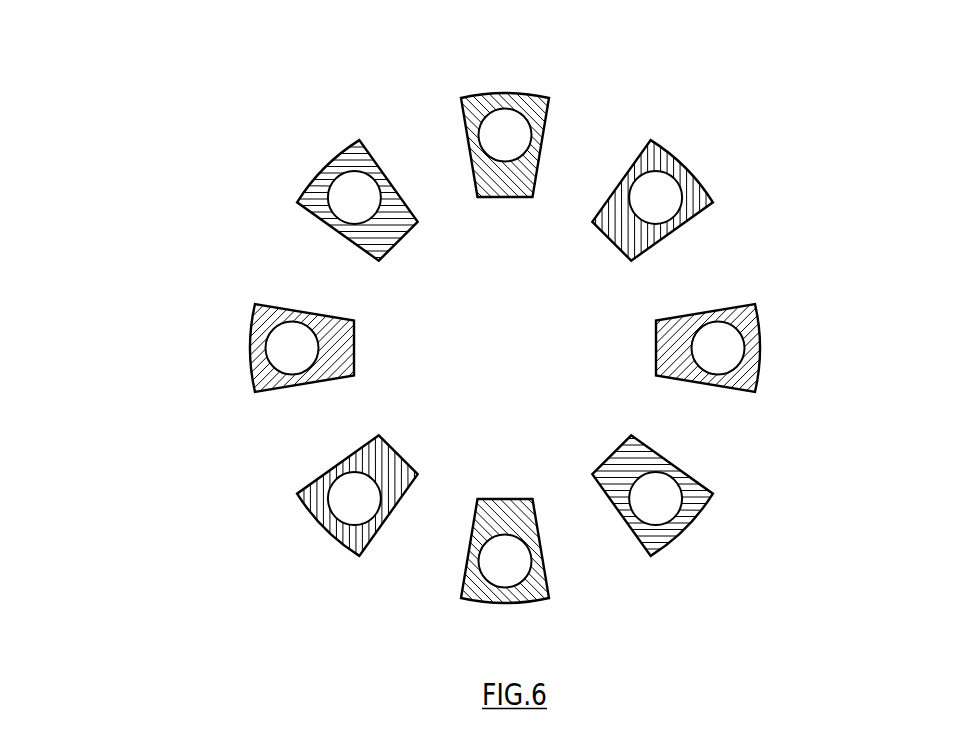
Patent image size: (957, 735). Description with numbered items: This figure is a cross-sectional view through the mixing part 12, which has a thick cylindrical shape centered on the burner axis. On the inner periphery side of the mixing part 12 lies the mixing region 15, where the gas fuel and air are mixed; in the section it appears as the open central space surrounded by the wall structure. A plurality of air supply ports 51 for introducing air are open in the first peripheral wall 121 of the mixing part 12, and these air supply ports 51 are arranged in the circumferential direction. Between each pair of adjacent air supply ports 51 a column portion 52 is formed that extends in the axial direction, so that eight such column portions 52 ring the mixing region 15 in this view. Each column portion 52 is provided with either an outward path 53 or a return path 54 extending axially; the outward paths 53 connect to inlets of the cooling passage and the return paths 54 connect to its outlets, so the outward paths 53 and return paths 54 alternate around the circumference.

The mixing part 12 is at (153, 345).
The first peripheral wall 121 is at (252, 376).
The mixing region 15 is at (516, 358).
The air supply port 51 is at (588, 147).
The column portion 52 is at (497, 96).
The outward path 53 is at (518, 148).
The return path 54 is at (656, 190).